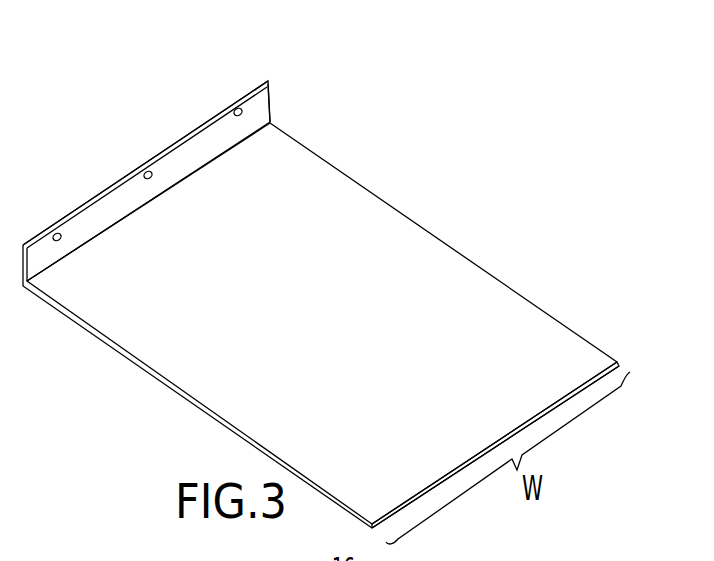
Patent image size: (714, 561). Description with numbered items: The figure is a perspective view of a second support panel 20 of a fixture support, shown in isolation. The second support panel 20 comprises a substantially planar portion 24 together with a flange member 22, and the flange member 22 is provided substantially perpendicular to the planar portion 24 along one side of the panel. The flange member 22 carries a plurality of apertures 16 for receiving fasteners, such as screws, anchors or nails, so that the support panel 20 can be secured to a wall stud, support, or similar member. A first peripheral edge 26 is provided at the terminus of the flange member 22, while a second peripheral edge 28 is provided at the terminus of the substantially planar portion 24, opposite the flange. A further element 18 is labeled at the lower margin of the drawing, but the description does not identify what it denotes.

The second support panel 20 is at (556, 250).
The flange member 22 is at (215, 137).
The substantially planar portion 24 is at (377, 225).
The first peripheral edge 26 is at (167, 148).
The second peripheral edge 28 is at (593, 381).
The apertures 16 is at (57, 233).
The fastener 18 is at (214, 557).